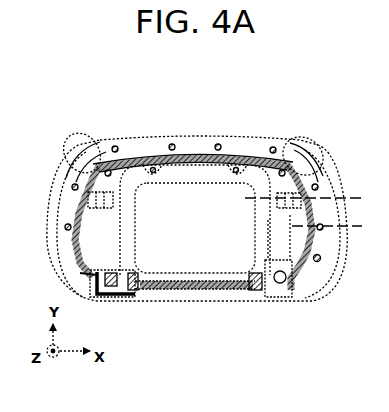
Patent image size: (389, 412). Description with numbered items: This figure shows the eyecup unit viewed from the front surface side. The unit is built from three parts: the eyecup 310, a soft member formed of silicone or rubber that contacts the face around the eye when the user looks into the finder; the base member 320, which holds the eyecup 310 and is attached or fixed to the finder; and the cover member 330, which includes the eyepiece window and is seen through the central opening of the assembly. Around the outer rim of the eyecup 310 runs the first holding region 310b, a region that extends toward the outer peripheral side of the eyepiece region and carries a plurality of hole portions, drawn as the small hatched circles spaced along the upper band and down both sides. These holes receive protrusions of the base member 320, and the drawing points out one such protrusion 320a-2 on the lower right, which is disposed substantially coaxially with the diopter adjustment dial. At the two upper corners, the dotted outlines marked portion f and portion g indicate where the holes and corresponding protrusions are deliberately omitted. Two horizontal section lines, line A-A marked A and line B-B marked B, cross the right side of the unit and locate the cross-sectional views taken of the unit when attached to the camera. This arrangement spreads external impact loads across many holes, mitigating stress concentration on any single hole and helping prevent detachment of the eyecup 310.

The eyecup 310 is at (261, 136).
The first holding region 310b is at (197, 143).
The base member 320 is at (87, 250).
The cover member 330 is at (130, 257).
The protrusion 320a-2 is at (318, 262).
The portion f is at (80, 136).
The portion g is at (316, 137).
The line A- A is at (367, 226).
The line B- B is at (368, 198).